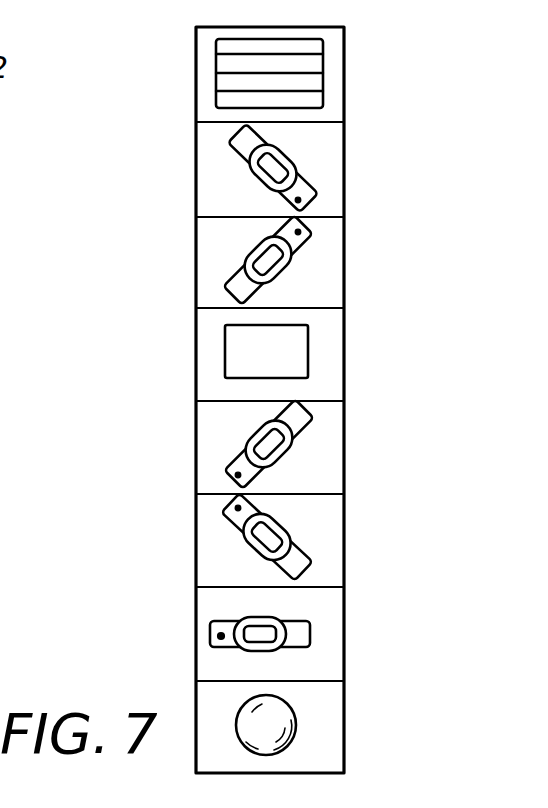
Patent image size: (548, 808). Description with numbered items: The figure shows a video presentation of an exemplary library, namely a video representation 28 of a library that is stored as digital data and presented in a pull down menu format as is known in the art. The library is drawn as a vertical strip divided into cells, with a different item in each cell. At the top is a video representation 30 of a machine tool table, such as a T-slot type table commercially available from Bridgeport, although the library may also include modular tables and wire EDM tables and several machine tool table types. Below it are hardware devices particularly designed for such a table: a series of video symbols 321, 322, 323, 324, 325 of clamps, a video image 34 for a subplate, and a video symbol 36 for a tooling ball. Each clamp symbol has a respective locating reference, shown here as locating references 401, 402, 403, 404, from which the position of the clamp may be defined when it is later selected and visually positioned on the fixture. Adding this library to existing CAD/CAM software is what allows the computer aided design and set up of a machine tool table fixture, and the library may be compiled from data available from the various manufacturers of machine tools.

The video representation of a library 28 is at (129, 429).
The video representation of a machine tool table 30 is at (345, 58).
The clamp video symbol 321 is at (283, 157).
The clamp video symbol 322 is at (252, 252).
The clamp video symbol 323 is at (283, 457).
The clamp video symbol 324 is at (292, 543).
The clamp video symbol 325 is at (311, 633).
The video image for a subplate 34 is at (309, 351).
The video symbol for a tooling ball 36 is at (297, 727).
The locating reference 401 is at (300, 199).
The locating reference 402 is at (300, 232).
The locating reference 403 is at (236, 475).
The locating reference 404 is at (237, 509).